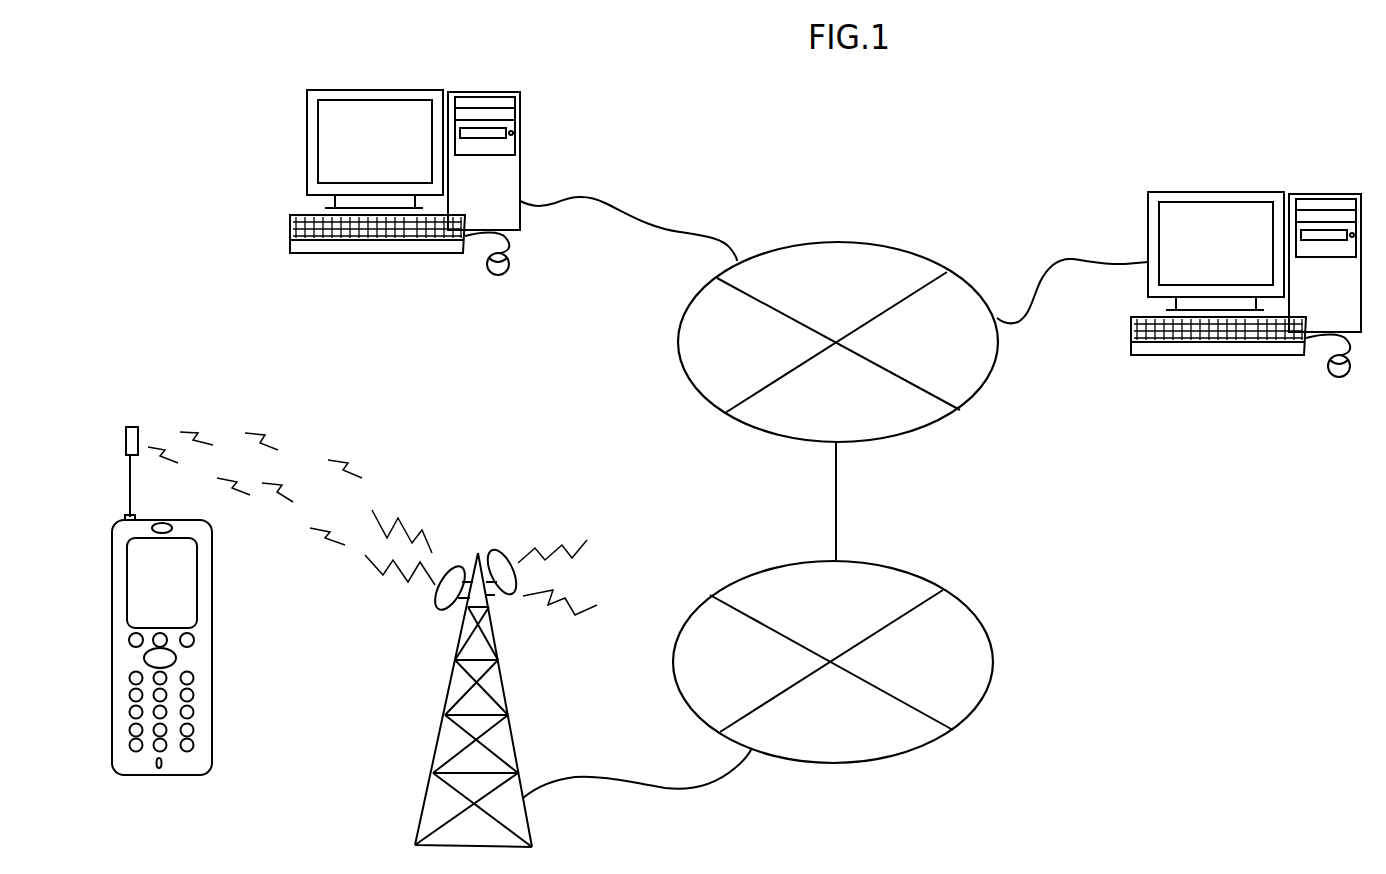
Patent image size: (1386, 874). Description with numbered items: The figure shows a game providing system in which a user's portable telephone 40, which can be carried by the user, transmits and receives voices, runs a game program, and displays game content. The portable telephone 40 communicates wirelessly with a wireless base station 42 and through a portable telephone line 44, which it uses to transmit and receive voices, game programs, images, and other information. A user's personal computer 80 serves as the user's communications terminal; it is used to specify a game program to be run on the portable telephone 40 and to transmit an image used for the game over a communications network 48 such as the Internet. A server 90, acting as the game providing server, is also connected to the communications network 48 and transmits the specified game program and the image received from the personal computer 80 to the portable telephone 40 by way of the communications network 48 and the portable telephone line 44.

The portable telephone 40 is at (112, 578).
The wireless base station 42 is at (478, 550).
The portable telephone line 44 is at (962, 627).
The communications network 48 is at (918, 415).
The personal computer 80 is at (368, 90).
The server 90 is at (1208, 192).